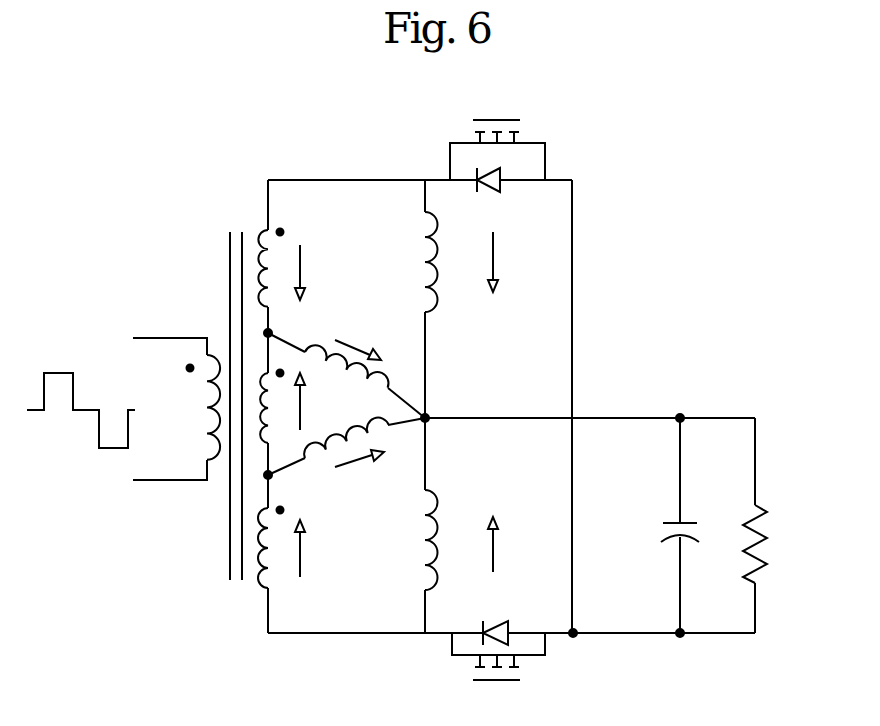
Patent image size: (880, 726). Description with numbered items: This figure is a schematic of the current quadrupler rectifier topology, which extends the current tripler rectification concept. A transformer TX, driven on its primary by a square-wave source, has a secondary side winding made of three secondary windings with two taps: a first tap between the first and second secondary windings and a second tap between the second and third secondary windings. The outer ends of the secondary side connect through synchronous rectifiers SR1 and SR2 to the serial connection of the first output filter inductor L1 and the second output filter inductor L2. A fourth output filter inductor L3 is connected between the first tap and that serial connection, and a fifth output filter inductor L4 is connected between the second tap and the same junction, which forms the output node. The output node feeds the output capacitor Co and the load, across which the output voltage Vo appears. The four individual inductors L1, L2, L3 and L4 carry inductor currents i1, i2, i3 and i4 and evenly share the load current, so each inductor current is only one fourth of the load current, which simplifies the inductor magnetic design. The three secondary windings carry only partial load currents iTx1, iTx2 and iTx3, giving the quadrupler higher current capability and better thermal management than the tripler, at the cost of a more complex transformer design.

The transformer TX is at (208, 409).
The synchronous rectifier SR1 is at (497, 135).
The synchronous rectifier SR2 is at (498, 672).
The first output filter inductor L1 is at (452, 262).
The second output filter inductor L2 is at (453, 540).
The fourth output filter inductor L3 is at (346, 365).
The fifth output filter inductor L4 is at (346, 463).
The inductor current i1 is at (513, 262).
The inductor current i2 is at (513, 545).
The inductor current i3 is at (374, 357).
The inductor current i4 is at (376, 454).
The first secondary winding current iTx1 is at (318, 272).
The second secondary winding current iTx2 is at (318, 401).
The third secondary winding current iTx3 is at (318, 548).
The output capacitor Co is at (665, 525).
The output voltage Vo is at (779, 525).